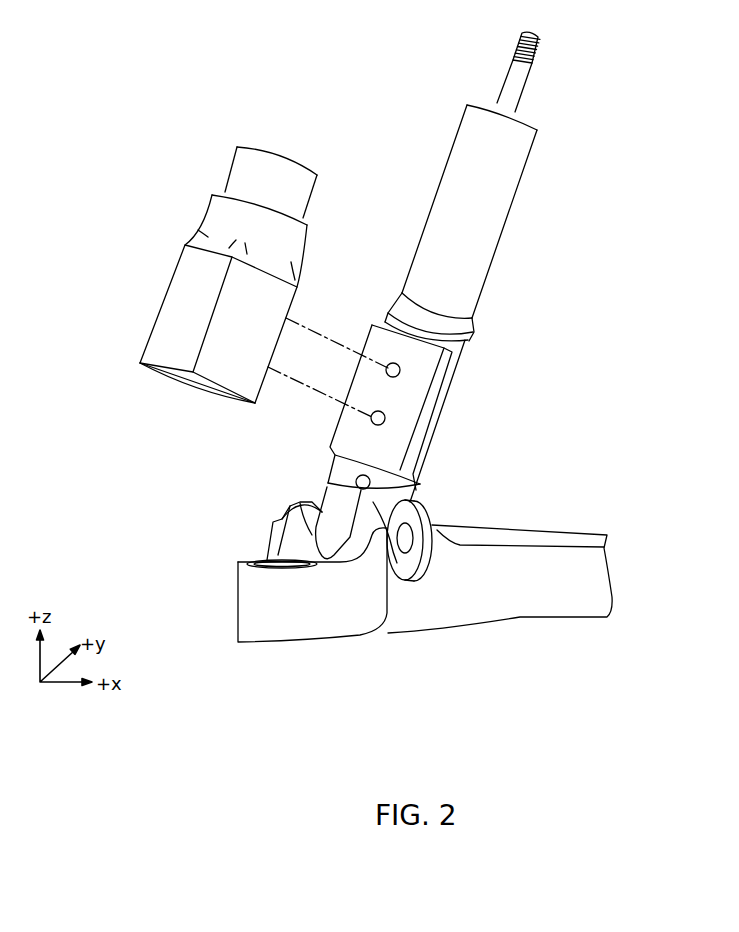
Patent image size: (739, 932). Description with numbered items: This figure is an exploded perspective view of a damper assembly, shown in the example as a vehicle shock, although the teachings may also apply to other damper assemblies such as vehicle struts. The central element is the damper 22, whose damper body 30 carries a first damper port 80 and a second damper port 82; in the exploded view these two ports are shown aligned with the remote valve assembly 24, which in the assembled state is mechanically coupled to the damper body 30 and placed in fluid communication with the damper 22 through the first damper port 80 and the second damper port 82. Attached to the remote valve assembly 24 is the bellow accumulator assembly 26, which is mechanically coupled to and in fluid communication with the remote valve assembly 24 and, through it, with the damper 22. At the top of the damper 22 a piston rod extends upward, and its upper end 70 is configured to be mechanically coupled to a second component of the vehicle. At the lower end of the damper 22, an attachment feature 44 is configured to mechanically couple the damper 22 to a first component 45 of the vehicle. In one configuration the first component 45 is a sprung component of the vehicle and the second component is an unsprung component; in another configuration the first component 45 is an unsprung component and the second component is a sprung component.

The damper 22 is at (425, 154).
The remote valve assembly 24 is at (145, 303).
The bellow accumulator assembly 26 is at (217, 166).
The damper body 30 is at (438, 407).
The attachment feature 44 is at (343, 518).
The first component 45 is at (559, 513).
The upper end 70 is at (540, 45).
The first damper port 80 is at (400, 372).
The second damper port 82 is at (385, 420).